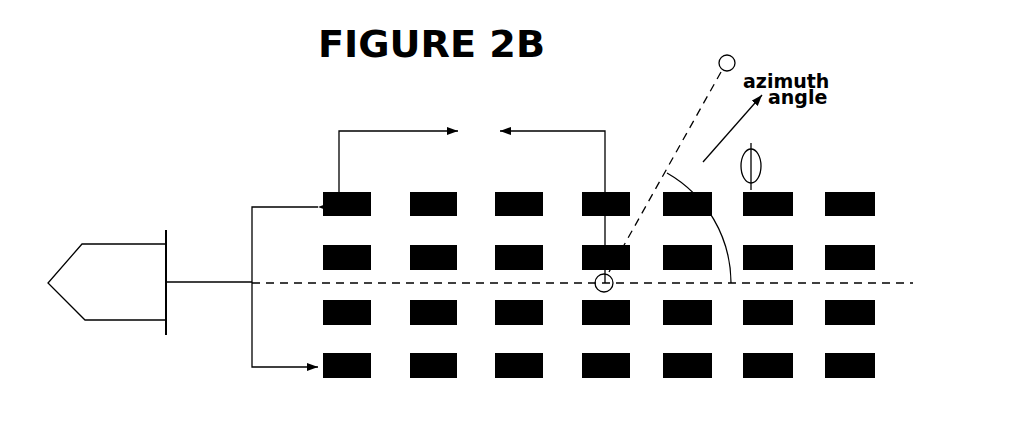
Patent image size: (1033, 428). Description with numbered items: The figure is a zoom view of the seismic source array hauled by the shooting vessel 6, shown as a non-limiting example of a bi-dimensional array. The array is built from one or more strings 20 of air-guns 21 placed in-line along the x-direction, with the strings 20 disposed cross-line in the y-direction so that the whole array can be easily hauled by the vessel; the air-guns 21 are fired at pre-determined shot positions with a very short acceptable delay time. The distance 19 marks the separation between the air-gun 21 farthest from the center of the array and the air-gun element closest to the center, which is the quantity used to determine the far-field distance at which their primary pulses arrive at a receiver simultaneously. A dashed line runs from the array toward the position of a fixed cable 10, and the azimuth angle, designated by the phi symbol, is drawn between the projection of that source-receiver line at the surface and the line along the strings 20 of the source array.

The shooting vessel 6 is at (150, 282).
The fixed cable 10 is at (677, 156).
The distance between farthest and closest air-gun elements 19 is at (472, 200).
The string 20 is at (319, 315).
The air-gun 21 is at (322, 191).